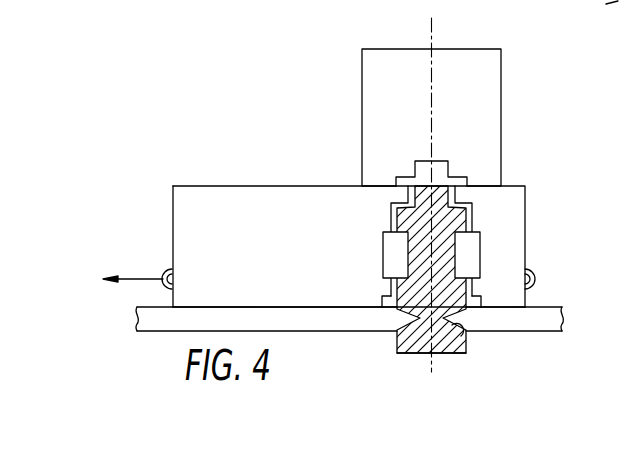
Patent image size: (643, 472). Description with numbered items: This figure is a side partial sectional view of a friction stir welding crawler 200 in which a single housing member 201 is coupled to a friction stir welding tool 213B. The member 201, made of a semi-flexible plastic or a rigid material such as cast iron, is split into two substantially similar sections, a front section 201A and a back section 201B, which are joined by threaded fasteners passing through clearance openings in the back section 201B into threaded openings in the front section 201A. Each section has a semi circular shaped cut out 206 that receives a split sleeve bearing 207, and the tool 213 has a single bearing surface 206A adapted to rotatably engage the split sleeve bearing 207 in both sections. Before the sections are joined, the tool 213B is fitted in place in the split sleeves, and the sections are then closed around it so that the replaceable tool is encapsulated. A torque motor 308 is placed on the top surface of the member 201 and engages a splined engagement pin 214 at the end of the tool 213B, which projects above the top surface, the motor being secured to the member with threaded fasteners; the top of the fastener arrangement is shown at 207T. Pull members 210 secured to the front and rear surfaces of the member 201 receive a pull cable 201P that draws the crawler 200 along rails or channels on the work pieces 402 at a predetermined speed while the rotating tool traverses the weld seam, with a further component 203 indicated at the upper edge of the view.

The friction stir welding crawler 200 is at (198, 131).
The member 201 is at (176, 174).
The front section 201A is at (255, 193).
The back section 201B is at (505, 192).
The pull cable 201P is at (135, 277).
The upper component 203 is at (597, 8).
The semi circular shaped cut out 206 is at (383, 237).
The bearing surface 206A is at (481, 212).
The split sleeve bearing 207 is at (389, 256).
The top of fastener 207T is at (317, 187).
The pull member 210 is at (165, 268).
The tool 213 is at (463, 334).
The friction stir welding tool 213B is at (442, 349).
The splined engagement pin 214 is at (479, 303).
The torque motor 308 is at (493, 77).
The work pieces 402 is at (557, 316).